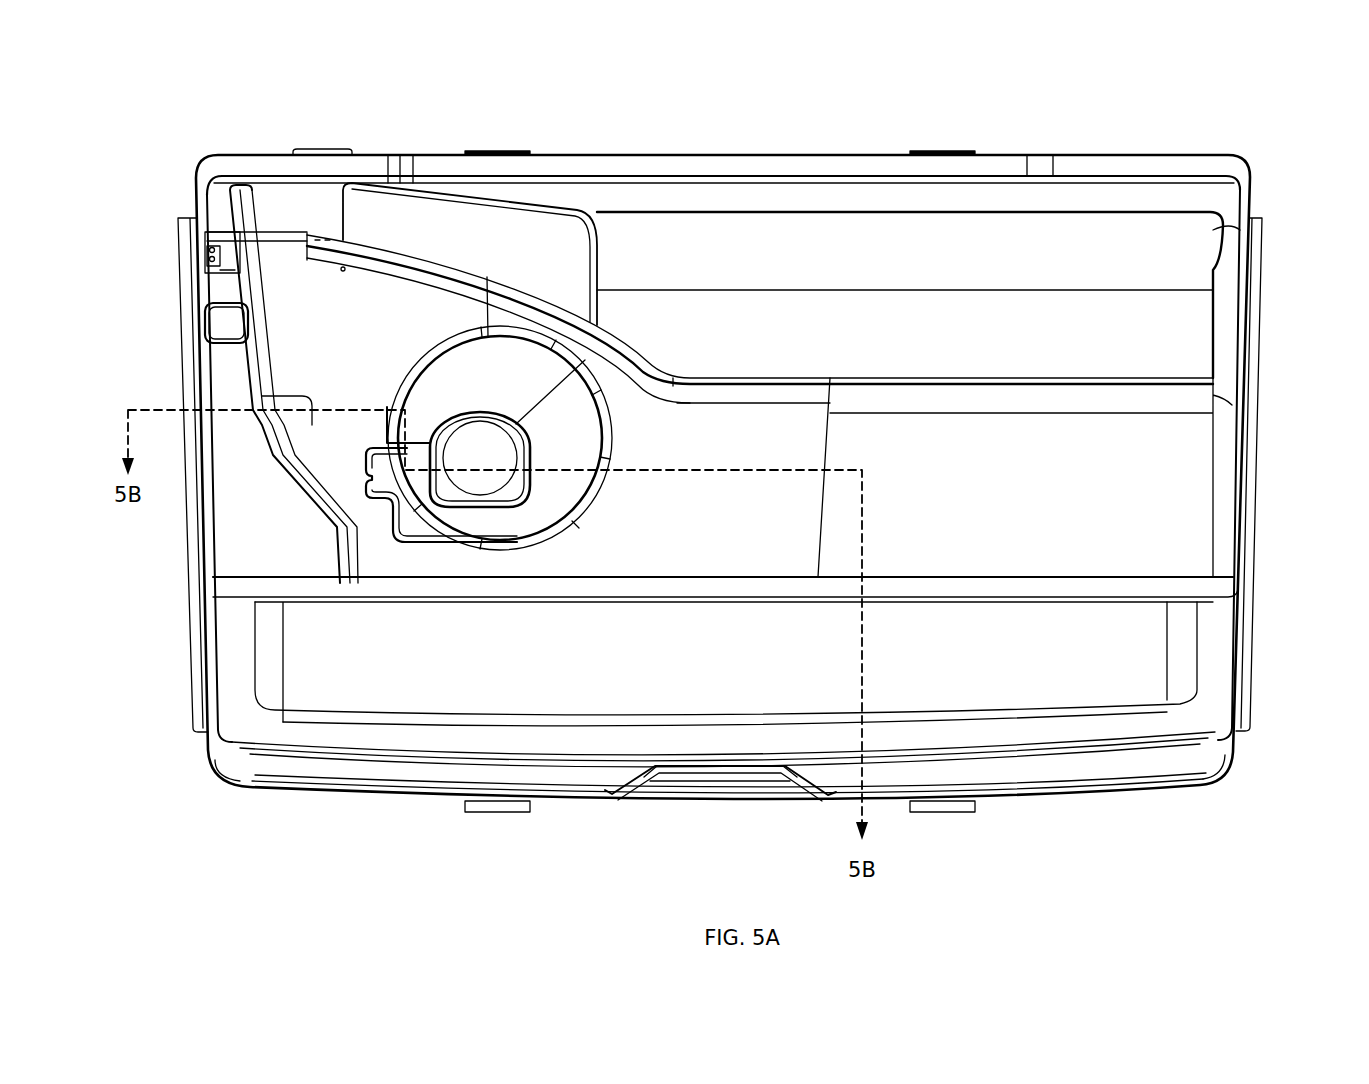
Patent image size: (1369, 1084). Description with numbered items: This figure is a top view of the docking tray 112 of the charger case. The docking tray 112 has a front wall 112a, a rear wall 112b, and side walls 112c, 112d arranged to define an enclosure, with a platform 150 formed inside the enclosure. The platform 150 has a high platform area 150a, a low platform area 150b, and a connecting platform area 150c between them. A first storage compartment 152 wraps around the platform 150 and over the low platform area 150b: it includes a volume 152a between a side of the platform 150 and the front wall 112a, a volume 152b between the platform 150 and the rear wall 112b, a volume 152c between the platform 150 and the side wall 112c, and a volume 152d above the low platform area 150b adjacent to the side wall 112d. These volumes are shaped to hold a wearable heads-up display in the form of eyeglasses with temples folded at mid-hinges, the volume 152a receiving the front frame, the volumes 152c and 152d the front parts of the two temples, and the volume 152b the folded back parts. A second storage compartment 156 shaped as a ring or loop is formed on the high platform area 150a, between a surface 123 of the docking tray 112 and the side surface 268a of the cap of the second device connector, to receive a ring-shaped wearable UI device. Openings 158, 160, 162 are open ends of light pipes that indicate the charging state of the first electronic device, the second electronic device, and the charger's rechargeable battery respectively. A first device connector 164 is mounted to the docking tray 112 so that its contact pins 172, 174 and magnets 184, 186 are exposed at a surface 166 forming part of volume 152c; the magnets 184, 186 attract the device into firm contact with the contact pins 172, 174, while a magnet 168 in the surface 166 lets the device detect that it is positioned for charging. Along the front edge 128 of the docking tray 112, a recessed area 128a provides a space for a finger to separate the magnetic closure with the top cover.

The docking tray 112 is at (1135, 165).
The front wall 112a is at (1000, 740).
The rear wall 112b is at (868, 200).
The side wall 112c is at (208, 660).
The side wall 112d is at (1250, 395).
The surface of the docking tray 123 is at (403, 550).
The front edge 128 is at (1105, 770).
The recessed area 128a is at (643, 790).
The platform 150 is at (518, 280).
The high platform area 150a is at (428, 292).
The low platform area 150b is at (1030, 430).
The connecting platform area 150c is at (755, 417).
The first storage compartment 152 is at (333, 683).
The volume 152a is at (772, 678).
The volume 152b is at (931, 341).
The volume 152c is at (228, 520).
The volume 152d is at (1085, 518).
The second storage compartment 156 is at (552, 510).
The opening 158 is at (300, 397).
The opening 160 is at (380, 410).
The opening 162 is at (343, 266).
The first device connector 164 is at (210, 250).
The surface 166 is at (222, 360).
The magnet 168 is at (225, 323).
The contact pin 172 is at (208, 242).
The contact pin 174 is at (217, 260).
The magnet 184 is at (212, 232).
The magnet 186 is at (213, 272).
The side surface of cap 268a is at (427, 503).